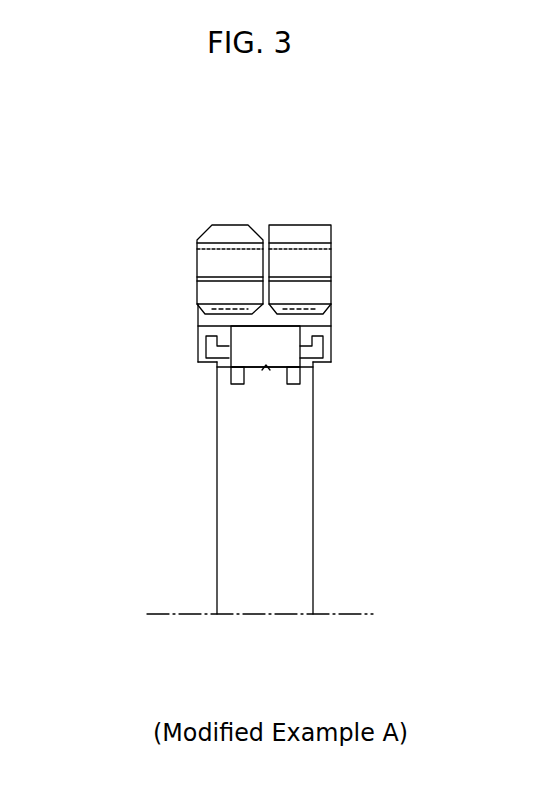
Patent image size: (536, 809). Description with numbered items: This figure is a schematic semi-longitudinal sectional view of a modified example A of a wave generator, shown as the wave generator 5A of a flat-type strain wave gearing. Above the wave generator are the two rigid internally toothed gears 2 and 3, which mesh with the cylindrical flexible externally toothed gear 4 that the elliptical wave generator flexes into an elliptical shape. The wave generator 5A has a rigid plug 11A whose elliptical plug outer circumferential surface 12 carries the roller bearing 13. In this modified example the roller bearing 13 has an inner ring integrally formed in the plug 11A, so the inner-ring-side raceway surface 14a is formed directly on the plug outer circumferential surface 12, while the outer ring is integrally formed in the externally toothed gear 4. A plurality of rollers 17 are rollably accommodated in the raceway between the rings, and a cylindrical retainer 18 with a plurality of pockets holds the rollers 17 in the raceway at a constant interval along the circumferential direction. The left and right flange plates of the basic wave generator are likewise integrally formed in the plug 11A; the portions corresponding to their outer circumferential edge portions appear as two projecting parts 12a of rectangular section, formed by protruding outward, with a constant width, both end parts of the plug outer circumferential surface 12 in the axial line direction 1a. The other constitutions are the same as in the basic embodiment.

The rigid internally toothed gear 3 is at (190, 228).
The rigid internally toothed gear 2 is at (340, 228).
The cylindrical flexible externally toothed gear 4 is at (189, 331).
The roller bearing 13 is at (189, 347).
The cylindrical retainer 18 is at (208, 352).
The projecting part 12a is at (223, 366).
The plug outer circumferential surface 12 is at (246, 374).
The inner-ring-side raceway surface 14a is at (265, 367).
The roller 17 is at (278, 344).
The wave generator 5A is at (192, 483).
The plug 11A is at (276, 520).
The axial line direction 1a is at (347, 614).